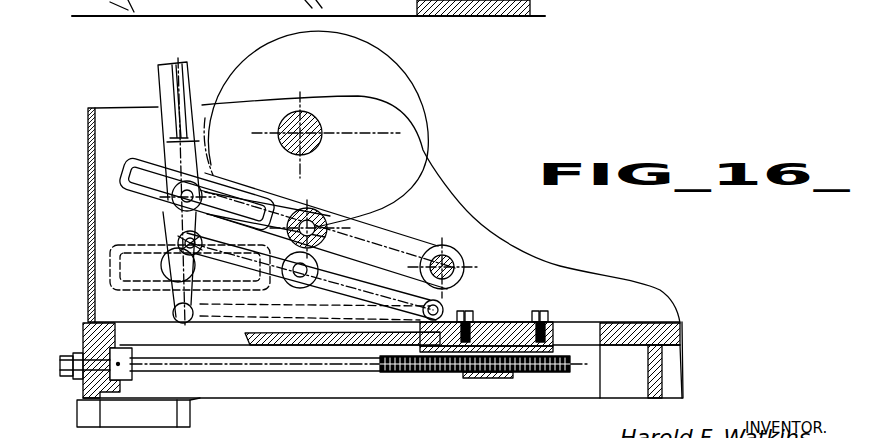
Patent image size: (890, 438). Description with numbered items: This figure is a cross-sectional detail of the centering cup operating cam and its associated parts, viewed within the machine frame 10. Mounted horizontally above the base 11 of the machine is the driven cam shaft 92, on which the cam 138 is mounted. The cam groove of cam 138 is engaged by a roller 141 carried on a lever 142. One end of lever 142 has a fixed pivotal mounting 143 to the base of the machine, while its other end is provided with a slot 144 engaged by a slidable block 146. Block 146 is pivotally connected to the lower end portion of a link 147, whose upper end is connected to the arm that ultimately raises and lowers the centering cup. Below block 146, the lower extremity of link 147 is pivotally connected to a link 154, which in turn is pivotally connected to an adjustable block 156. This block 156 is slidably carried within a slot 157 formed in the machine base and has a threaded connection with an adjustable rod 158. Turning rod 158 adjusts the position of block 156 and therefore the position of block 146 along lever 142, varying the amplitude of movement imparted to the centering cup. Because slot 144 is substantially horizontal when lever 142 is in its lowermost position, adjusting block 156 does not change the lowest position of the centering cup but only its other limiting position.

The housing 10 is at (80, 244).
The base 11 is at (526, 390).
The cam shaft 92 is at (322, 126).
The cam 138 is at (430, 100).
The roller 141 is at (311, 212).
The lever 142 is at (393, 229).
The fixed pivotal mounting 143 is at (450, 257).
The slot 144 is at (248, 205).
The slidable block 146 is at (212, 198).
The link 147 is at (166, 93).
The link 154 is at (347, 288).
The adjustable block 156 is at (492, 322).
The slot 157 is at (577, 332).
The adjustable rod 158 is at (397, 372).